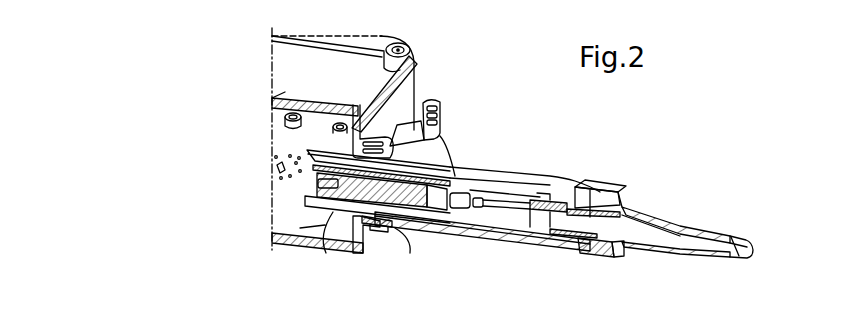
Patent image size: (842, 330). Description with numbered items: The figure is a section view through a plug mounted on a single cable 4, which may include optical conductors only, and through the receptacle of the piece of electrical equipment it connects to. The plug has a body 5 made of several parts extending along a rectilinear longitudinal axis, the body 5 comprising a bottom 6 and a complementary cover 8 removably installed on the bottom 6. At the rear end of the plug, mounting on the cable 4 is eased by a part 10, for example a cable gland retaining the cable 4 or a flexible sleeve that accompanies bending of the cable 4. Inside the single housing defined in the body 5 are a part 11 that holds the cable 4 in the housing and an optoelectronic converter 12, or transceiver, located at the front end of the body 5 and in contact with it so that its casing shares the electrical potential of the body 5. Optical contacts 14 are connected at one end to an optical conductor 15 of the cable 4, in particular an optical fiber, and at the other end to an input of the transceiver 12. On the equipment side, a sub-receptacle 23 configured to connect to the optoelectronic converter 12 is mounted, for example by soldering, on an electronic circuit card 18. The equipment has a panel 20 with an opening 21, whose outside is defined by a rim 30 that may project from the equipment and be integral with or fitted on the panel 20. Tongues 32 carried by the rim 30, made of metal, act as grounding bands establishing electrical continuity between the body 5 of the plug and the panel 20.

The cable 4 is at (708, 234).
The body 5 is at (603, 250).
The bottom 6 is at (580, 243).
The cover 8 is at (592, 187).
The part arranged on the rear end of the plug 10 is at (642, 218).
The part serving to hold the cable 11 is at (567, 182).
The optoelectronic converter 12 is at (327, 220).
The optical contacts 14 is at (460, 200).
The optical conductor 15 is at (497, 243).
The electronic circuit card 18 is at (283, 143).
The panel 20 is at (408, 86).
The opening 21 is at (365, 235).
The sub-receptacle 23 is at (292, 185).
The rim 30 is at (384, 136).
The tongues 32 is at (388, 231).